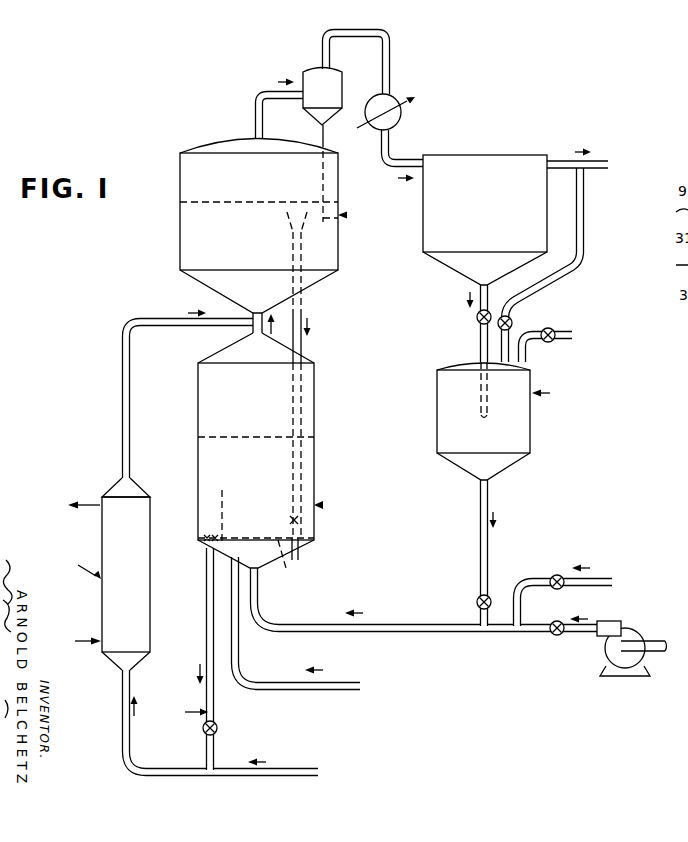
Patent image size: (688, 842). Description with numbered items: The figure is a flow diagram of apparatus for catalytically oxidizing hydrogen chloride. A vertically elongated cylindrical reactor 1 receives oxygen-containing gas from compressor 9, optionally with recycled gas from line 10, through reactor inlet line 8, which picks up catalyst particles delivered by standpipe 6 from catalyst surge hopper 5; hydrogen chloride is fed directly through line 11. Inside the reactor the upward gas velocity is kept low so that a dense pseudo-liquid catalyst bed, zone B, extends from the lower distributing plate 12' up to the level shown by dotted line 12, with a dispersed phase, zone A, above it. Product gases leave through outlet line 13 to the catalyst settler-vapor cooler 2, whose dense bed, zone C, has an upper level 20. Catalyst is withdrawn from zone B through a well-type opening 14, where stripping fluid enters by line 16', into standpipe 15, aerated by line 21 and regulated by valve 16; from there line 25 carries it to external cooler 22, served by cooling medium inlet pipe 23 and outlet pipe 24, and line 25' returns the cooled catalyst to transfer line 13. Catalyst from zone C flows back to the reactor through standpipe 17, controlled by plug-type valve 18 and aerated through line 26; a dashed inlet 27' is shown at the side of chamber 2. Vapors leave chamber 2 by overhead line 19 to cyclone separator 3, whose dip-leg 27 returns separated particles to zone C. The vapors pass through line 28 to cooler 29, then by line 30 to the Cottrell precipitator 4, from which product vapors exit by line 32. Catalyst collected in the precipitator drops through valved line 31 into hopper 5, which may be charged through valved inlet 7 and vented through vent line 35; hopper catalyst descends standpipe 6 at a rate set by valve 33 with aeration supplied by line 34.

The catalytic reactor 1 is at (314, 397).
The catalyst settler-vapor cooler 2 is at (202, 150).
The cyclone separator 3 is at (346, 83).
The Cottrell precipitator 4 is at (451, 156).
The catalyst surge hopper 5 is at (531, 423).
The standpipe 6 is at (490, 495).
The valved inlet 7 is at (562, 341).
The reactor inlet line 8 is at (386, 624).
The compressor 9 is at (605, 644).
The recycle line 10 is at (525, 583).
The hydrogen chloride line 11 is at (331, 690).
The dense phase level 12 is at (238, 426).
The lower distributing plate 12' is at (256, 562).
The product vapor outlet line 13 is at (252, 332).
The well-type opening 14 is at (210, 516).
The standpipe 15 is at (206, 595).
The valve 16 is at (231, 733).
The stripping and aeration fluid line 16' is at (189, 551).
The standpipe 17 is at (302, 349).
The plug-type valve 18 is at (312, 531).
The overhead withdrawal line 19 is at (258, 97).
The upper level of zone C 20 is at (186, 199).
The aeration line 21 is at (190, 712).
The external cooler 22 is at (108, 493).
The inlet pipe 23 is at (80, 645).
The outlet pipe 24 is at (91, 508).
The line 25 is at (296, 725).
The line 25' is at (170, 394).
The aeration line 26 is at (322, 505).
The tailpipe or dip-leg 27 is at (343, 173).
The return inlet 27' is at (348, 232).
The line 28 is at (391, 62).
The cooler 29 is at (402, 114).
The line 30 is at (392, 169).
The valved line 31 is at (480, 348).
The product vapor line 32 is at (603, 172).
The valve 33 is at (477, 604).
The aeration line 34 is at (478, 585).
The vent line 35 is at (588, 260).
The dispersed phase zone A is at (200, 394).
The dense phase zone B is at (200, 458).
The dense bed zone of chamber 2 C is at (190, 228).